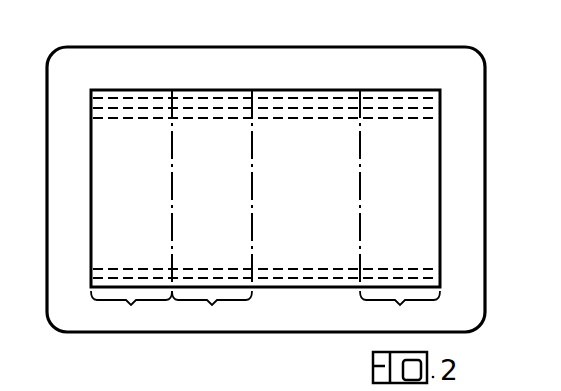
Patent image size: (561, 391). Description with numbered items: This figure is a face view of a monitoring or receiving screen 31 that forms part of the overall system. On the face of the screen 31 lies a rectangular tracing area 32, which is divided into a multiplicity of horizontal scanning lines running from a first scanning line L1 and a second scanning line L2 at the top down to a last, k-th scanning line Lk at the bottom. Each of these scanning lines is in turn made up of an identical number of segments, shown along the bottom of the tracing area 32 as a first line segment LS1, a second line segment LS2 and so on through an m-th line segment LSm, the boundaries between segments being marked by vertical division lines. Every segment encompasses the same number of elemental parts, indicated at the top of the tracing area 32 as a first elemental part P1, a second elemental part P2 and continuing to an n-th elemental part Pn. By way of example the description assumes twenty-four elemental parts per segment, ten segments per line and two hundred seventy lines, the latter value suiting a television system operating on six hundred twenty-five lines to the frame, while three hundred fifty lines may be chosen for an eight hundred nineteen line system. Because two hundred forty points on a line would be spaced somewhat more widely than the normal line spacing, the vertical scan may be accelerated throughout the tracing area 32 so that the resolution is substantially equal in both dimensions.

The screen 31 is at (402, 58).
The tracing area 32 is at (100, 185).
The first elemental part P1 is at (100, 97).
The second elemental part P2 is at (117, 97).
The n-th elemental part Pn is at (170, 97).
The first scanning line L1 is at (431, 97).
The second scanning line L2 is at (436, 108).
The k-th scanning line Lk is at (436, 278).
The first line segment LS1 is at (131, 311).
The second line segment LS2 is at (212, 311).
The m-th line segment LSm is at (400, 311).